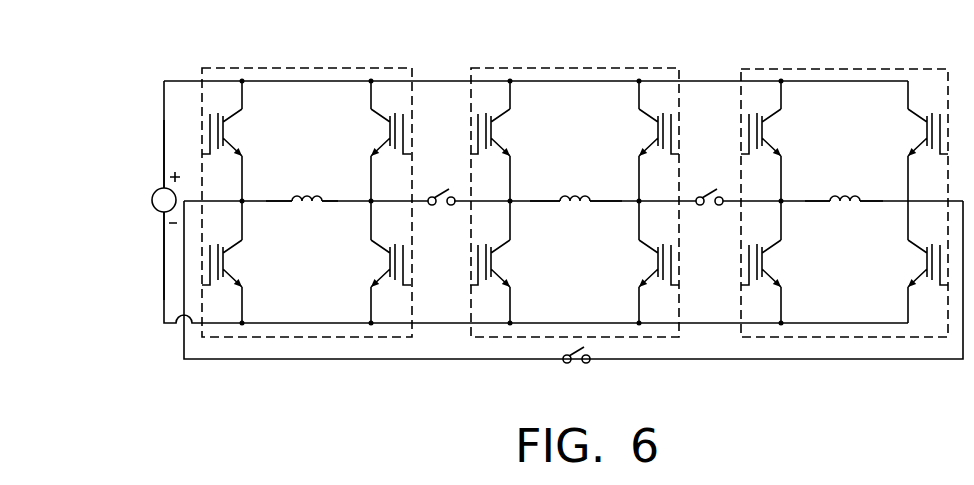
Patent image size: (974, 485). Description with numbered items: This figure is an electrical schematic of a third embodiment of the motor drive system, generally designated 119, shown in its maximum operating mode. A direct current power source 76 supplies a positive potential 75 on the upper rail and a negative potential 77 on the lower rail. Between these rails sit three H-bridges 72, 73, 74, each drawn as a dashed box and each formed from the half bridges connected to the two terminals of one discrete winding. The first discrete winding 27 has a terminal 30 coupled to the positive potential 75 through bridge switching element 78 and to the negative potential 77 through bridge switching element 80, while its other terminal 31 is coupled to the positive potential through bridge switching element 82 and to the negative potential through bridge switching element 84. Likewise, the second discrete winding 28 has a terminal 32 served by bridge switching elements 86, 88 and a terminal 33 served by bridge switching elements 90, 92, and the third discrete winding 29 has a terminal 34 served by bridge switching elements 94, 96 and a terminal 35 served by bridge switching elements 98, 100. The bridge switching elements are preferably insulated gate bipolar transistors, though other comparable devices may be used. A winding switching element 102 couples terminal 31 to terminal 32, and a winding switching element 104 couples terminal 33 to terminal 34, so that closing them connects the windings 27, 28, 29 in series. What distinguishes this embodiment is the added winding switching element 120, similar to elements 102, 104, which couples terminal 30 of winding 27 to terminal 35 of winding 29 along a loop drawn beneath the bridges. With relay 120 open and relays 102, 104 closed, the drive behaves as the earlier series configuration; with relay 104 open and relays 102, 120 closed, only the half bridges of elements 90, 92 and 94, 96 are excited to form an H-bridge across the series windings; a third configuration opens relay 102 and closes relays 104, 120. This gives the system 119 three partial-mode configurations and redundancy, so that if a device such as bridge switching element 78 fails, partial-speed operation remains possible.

The motor drive system 119 is at (773, 52).
The H-bridge 72 is at (340, 68).
The H-bridge 73 is at (613, 68).
The H-bridge 74 is at (872, 69).
The positive potential 75 is at (164, 137).
The direct current power source 76 is at (155, 210).
The negative potential 77 is at (163, 290).
The bridge switching element 78 is at (223, 135).
The bridge switching element 80 is at (223, 266).
The bridge switching element 82 is at (390, 135).
The bridge switching element 84 is at (390, 266).
The bridge switching element 86 is at (491, 135).
The bridge switching element 88 is at (491, 266).
The bridge switching element 90 is at (658, 135).
The bridge switching element 92 is at (658, 266).
The bridge switching element 94 is at (762, 135).
The bridge switching element 96 is at (762, 266).
The bridge switching element 98 is at (927, 137).
The bridge switching element 100 is at (927, 266).
The discrete winding 27 is at (305, 198).
The discrete winding 28 is at (565, 198).
The discrete winding 29 is at (845, 198).
The terminal 30 is at (266, 203).
The terminal 31 is at (338, 203).
The terminal 32 is at (530, 203).
The terminal 33 is at (622, 203).
The terminal 34 is at (805, 203).
The terminal 35 is at (883, 203).
The winding switching element 102 is at (450, 205).
The winding switching element 104 is at (719, 205).
The winding switching element 120 is at (586, 363).